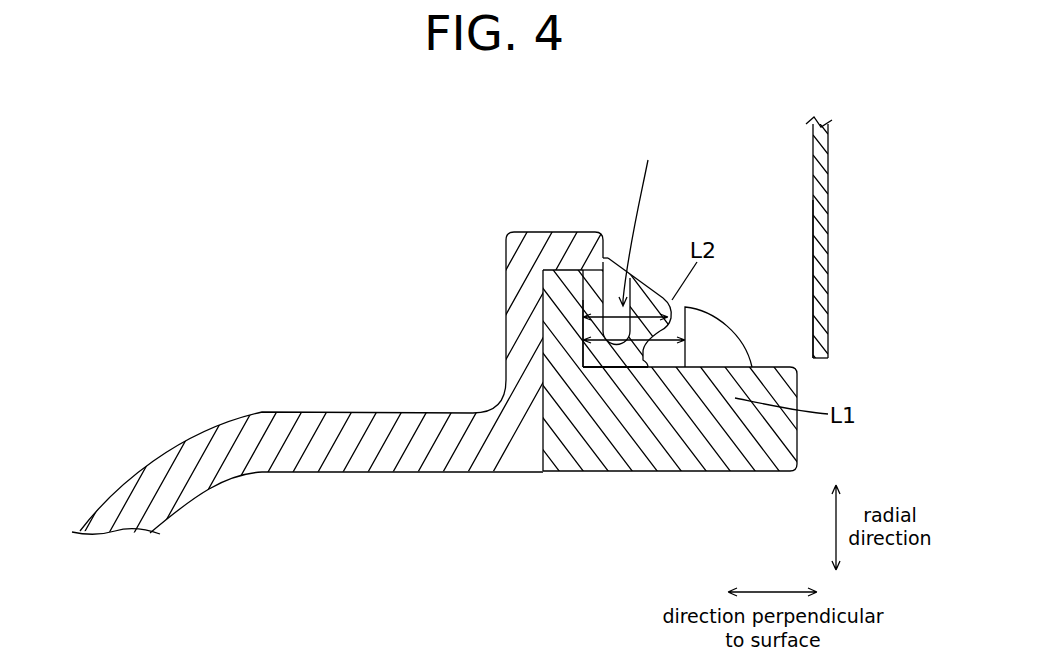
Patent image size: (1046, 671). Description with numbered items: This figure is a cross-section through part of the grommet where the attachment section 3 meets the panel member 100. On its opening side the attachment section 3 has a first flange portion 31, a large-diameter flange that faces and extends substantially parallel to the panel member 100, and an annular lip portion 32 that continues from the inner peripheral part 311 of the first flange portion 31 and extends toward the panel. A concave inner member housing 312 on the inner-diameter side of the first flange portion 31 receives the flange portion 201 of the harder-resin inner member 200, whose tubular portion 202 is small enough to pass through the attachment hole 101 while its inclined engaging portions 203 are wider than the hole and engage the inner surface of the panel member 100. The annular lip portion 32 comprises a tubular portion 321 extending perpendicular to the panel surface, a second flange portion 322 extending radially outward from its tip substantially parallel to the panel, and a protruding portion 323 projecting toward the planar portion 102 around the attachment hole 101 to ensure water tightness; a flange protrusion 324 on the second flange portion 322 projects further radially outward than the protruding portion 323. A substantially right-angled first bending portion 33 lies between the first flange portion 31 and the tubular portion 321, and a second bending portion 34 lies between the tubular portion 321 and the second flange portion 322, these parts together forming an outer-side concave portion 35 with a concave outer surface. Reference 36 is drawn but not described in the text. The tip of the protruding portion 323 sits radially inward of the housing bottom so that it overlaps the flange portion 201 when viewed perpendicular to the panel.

The attachment section 3 is at (334, 416).
The first flange portion 31 is at (538, 237).
The inner peripheral part 311 is at (592, 262).
The inner member housing 312 is at (572, 330).
The annular lip portion 32 is at (636, 275).
The tubular portion 321 is at (593, 352).
The second flange portion 322 is at (673, 302).
The protruding portion 323 is at (668, 322).
The flange protrusion 324 is at (656, 292).
The first bending portion 33 is at (614, 285).
The second bending portion 34 is at (660, 370).
The outer-side concave portion 35 is at (643, 220).
The wall portion 36 is at (605, 295).
The panel member 100 is at (822, 178).
The attachment hole 101 is at (820, 358).
The planar portion 102 is at (818, 313).
The inner member 200 is at (667, 445).
The flange portion 201 is at (545, 318).
The tubular portion 202 is at (626, 432).
The engaging portion 203 is at (735, 346).